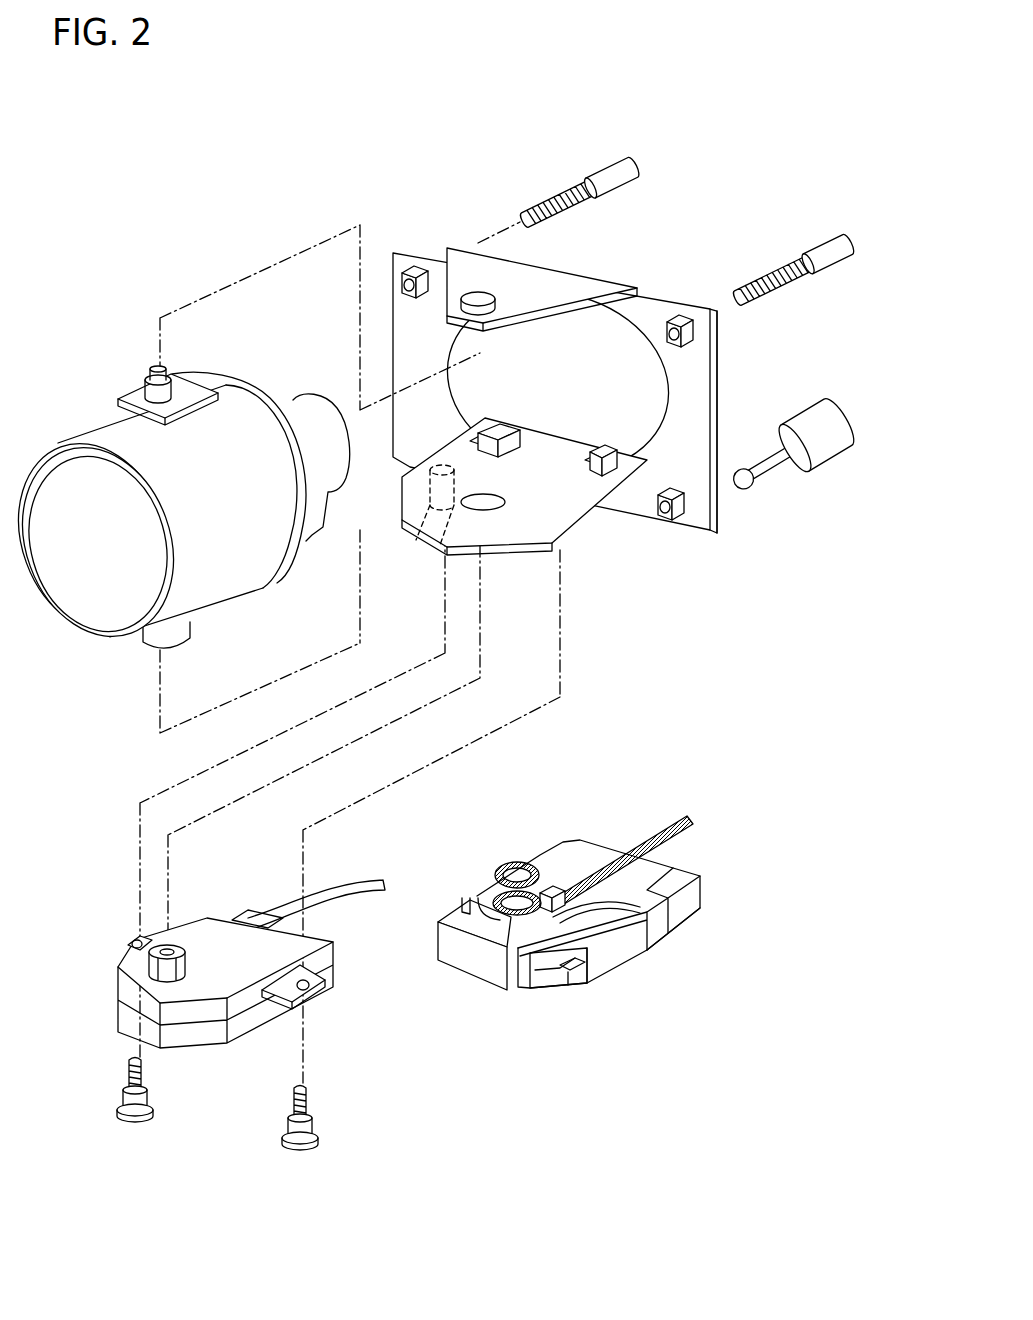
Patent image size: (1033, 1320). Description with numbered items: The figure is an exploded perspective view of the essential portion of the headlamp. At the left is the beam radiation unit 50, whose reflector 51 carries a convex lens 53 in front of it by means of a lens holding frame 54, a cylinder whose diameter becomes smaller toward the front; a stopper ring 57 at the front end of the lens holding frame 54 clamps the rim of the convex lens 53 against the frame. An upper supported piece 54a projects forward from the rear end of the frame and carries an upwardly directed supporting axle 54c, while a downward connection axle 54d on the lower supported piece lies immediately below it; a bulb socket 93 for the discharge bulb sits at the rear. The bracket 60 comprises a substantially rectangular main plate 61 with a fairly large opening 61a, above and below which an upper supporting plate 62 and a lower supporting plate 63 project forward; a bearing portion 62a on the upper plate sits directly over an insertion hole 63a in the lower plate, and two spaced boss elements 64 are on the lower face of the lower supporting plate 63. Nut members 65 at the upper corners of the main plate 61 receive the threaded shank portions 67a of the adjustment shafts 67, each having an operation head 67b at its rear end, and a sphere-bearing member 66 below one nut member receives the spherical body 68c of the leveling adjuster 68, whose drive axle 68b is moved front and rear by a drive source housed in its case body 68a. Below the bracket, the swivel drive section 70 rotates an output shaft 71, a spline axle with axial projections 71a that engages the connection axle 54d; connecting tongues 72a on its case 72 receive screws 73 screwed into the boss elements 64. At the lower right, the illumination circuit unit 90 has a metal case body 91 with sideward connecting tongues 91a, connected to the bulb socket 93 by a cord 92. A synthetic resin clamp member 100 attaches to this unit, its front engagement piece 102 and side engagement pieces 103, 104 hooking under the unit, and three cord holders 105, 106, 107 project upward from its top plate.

The beam radiation unit 50 is at (175, 450).
The reflector 51 is at (233, 378).
The convex lens 53 is at (113, 607).
The lens holding frame 54 is at (227, 580).
The upper supported piece 54a is at (132, 393).
The supporting axle 54c is at (163, 368).
The connection axle 54d is at (153, 643).
The stopper ring 57 is at (68, 453).
The bulb socket 93 is at (335, 406).
The bracket 60 is at (612, 362).
The main plate 61 is at (601, 369).
The opening 61a is at (720, 362).
The upper supporting plate 62 is at (542, 270).
The bearing portion 62a is at (470, 292).
The lower supporting plate 63 is at (514, 534).
The insertion hole 63a is at (478, 508).
The boss elements 64 is at (600, 472).
The nut members 65 is at (418, 272).
The sphere-bearing member 66 is at (672, 527).
The adjustment shafts 67 is at (672, 189).
The threaded shank portion 67a is at (568, 190).
The operation head 67b is at (623, 170).
The leveling adjuster 68 is at (792, 524).
The case body 68a is at (837, 450).
The drive axle 68b is at (770, 472).
The spherical body 68c is at (740, 493).
The swivel drive section 70 is at (233, 1029).
The output shaft 71 is at (148, 1029).
The projections 71a is at (177, 953).
The case 72 is at (317, 942).
The connecting tongues 72a is at (135, 945).
The screws 73 is at (313, 1123).
The illumination circuit unit 90 is at (609, 923).
The case body 91 is at (666, 916).
The connecting tongues 91a is at (572, 983).
The cord 92 is at (688, 818).
The clamp member 100 is at (609, 923).
The front engagement piece 102 is at (477, 973).
The side engagement piece 103 is at (673, 925).
The side engagement piece 104 is at (535, 860).
The cord holder 105 is at (510, 913).
The cord holder 106 is at (505, 868).
The cord holder 107 is at (563, 903).